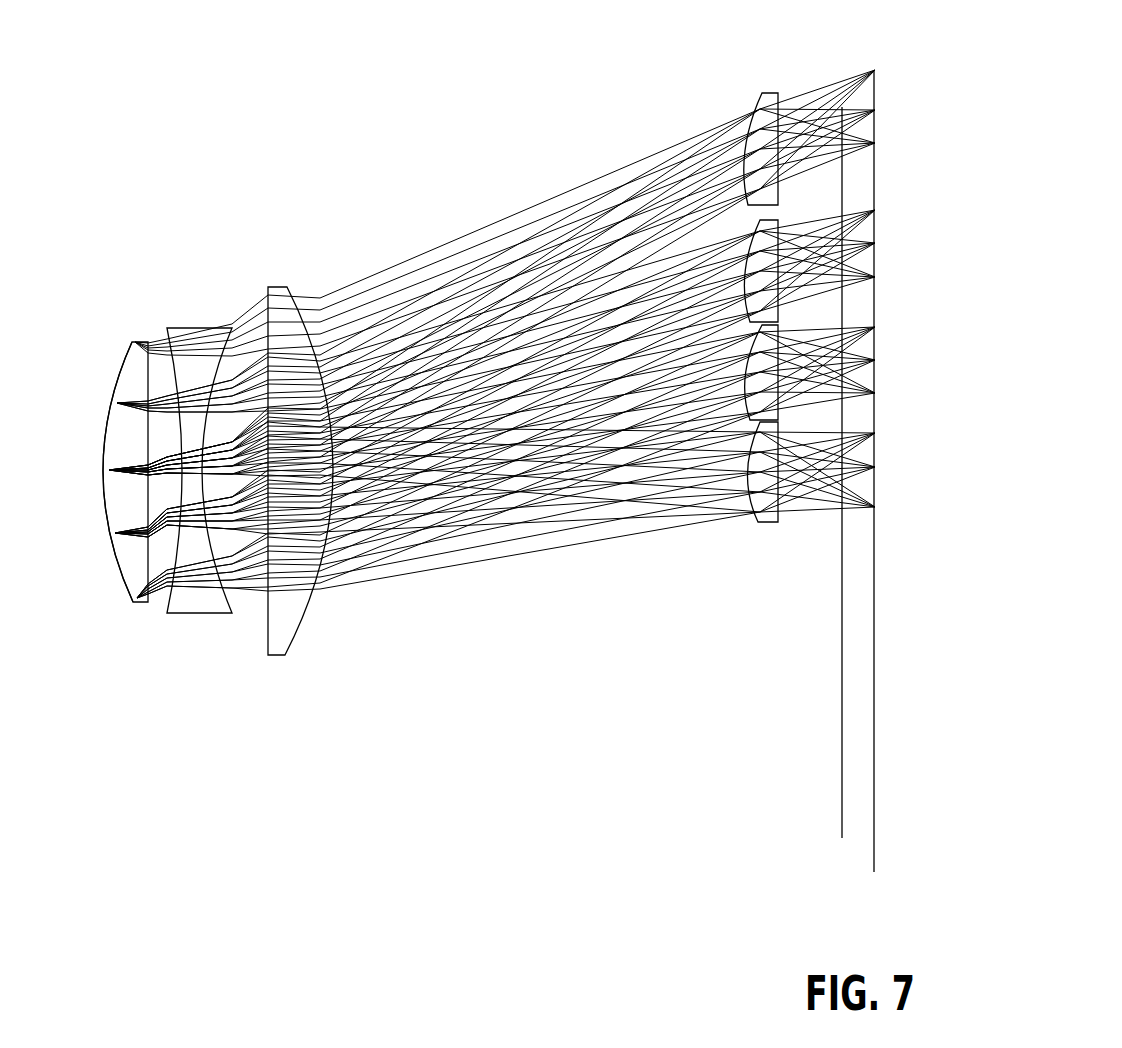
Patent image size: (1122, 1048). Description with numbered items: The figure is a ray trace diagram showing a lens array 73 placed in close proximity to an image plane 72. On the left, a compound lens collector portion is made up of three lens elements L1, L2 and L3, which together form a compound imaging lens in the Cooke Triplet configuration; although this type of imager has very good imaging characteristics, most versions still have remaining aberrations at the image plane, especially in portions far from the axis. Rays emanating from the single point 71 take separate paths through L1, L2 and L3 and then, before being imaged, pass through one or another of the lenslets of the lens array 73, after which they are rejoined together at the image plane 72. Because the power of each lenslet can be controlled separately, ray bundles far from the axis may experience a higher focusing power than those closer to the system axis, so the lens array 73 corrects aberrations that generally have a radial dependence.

The first lens element of the compound lens collector L1 is at (124, 354).
The second lens element of the compound lens collector L2 is at (183, 326).
The third lens element of the compound lens collector L3 is at (271, 285).
The single point 71 is at (112, 539).
The image plane 72 is at (877, 87).
The lens array 73 is at (760, 102).